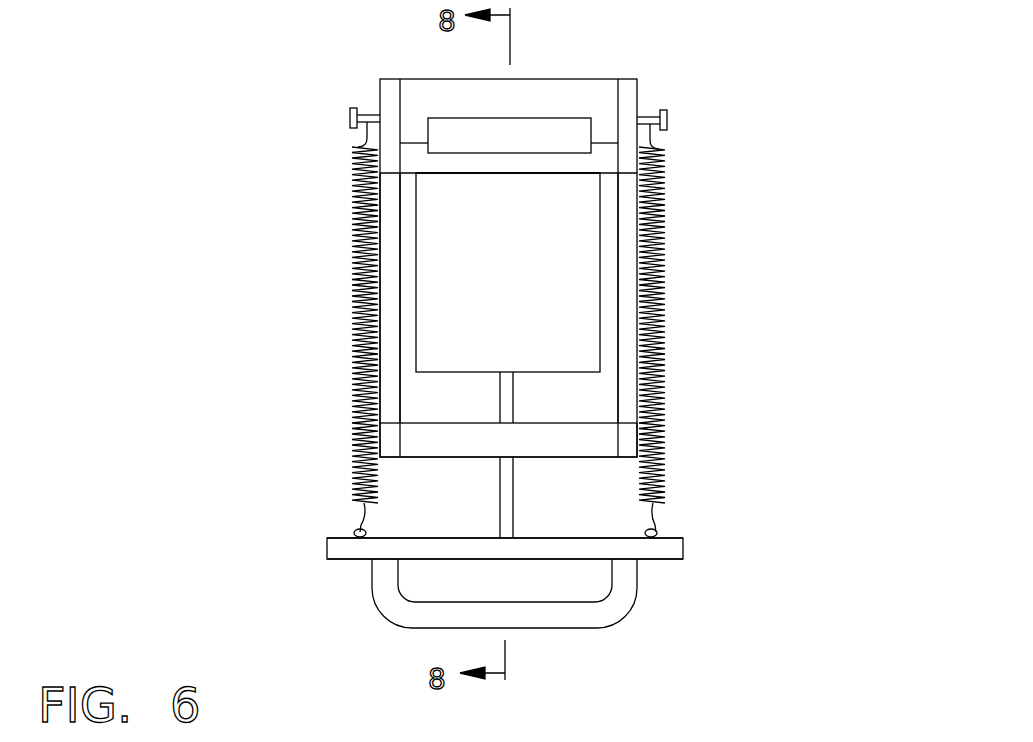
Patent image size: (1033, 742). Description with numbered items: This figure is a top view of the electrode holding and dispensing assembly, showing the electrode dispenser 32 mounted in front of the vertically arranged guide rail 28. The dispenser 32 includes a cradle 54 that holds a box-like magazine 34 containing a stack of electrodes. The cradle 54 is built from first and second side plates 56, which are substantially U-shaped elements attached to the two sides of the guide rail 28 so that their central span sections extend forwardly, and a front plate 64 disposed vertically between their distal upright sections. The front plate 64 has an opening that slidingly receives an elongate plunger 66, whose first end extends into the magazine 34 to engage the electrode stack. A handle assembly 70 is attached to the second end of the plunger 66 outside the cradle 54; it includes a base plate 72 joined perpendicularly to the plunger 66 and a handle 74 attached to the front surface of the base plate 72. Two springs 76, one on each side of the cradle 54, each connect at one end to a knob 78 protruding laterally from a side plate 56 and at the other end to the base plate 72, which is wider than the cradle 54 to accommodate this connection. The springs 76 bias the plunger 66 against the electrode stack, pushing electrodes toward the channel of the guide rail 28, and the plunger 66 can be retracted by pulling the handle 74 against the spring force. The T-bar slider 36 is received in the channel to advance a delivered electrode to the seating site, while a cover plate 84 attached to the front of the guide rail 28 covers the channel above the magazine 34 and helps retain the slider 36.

The guide rail 28 is at (422, 79).
The electrode dispenser 32 is at (307, 530).
The magazine 34 is at (529, 262).
The T-bar slider 36 is at (546, 118).
The cradle 54 is at (352, 260).
The side plates 56 is at (387, 306).
The front plate 64 is at (564, 456).
The plunger 66 is at (515, 393).
The handle assembly 70 is at (672, 562).
The base plate 72 is at (355, 548).
The handle 74 is at (578, 620).
The springs 76 is at (352, 197).
The knob 78 is at (350, 115).
The cover plate 84 is at (507, 168).